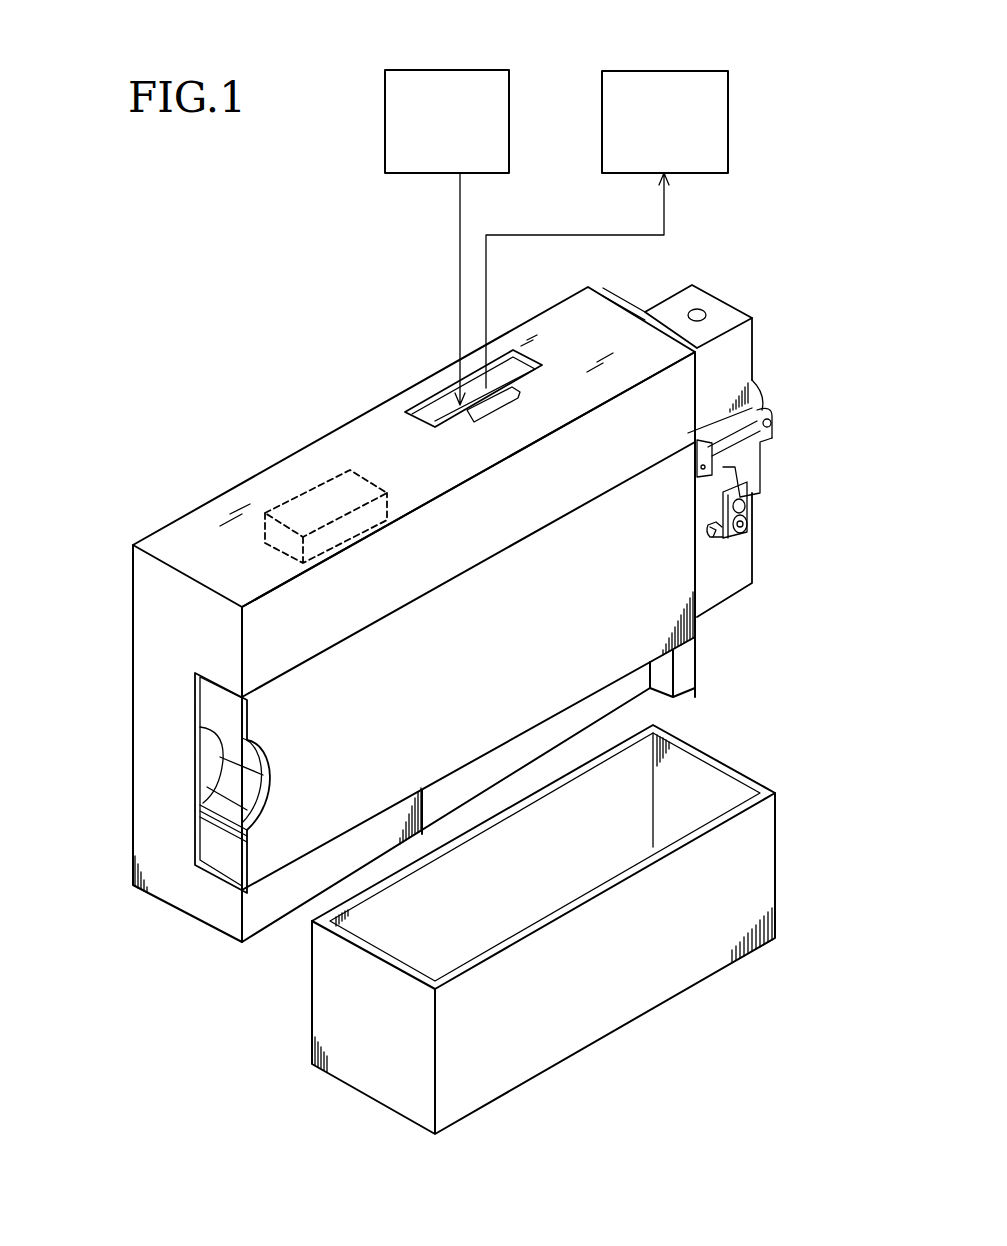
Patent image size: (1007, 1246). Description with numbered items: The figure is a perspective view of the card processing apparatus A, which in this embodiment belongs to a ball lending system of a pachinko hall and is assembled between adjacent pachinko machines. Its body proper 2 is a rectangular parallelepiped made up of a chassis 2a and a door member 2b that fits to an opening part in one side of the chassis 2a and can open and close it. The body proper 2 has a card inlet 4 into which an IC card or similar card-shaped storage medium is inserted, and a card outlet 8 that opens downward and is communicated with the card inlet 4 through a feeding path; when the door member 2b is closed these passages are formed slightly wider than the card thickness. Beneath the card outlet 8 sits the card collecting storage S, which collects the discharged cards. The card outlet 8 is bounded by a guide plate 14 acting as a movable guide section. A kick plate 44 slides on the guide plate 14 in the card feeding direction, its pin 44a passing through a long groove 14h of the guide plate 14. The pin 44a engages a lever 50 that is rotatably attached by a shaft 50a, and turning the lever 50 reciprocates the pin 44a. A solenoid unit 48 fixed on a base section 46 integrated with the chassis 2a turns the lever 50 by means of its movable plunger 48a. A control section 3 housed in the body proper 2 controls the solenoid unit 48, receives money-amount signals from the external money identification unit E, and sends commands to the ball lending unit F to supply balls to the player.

The card processing apparatus A is at (219, 286).
The body proper 2 is at (62, 578).
The chassis 2a is at (163, 615).
The door member 2b is at (270, 712).
The control section 3 is at (305, 490).
The card inlet 4 is at (192, 828).
The card outlet 8 is at (616, 696).
The guide plate 14 is at (728, 568).
The long groove 14h is at (713, 532).
The kick plate 44 is at (707, 537).
The pin 44a is at (745, 525).
The base section 46 is at (680, 285).
The solenoid unit 48 is at (735, 343).
The movable plunger 48a is at (762, 402).
The lever 50 is at (746, 462).
The shaft 50a is at (773, 421).
The external apparatus (money identification unit) E is at (492, 56).
The ball lending unit F is at (708, 51).
The card collecting storage S is at (755, 872).